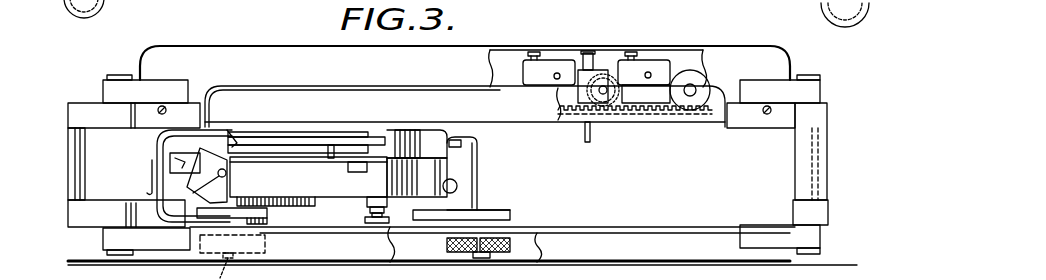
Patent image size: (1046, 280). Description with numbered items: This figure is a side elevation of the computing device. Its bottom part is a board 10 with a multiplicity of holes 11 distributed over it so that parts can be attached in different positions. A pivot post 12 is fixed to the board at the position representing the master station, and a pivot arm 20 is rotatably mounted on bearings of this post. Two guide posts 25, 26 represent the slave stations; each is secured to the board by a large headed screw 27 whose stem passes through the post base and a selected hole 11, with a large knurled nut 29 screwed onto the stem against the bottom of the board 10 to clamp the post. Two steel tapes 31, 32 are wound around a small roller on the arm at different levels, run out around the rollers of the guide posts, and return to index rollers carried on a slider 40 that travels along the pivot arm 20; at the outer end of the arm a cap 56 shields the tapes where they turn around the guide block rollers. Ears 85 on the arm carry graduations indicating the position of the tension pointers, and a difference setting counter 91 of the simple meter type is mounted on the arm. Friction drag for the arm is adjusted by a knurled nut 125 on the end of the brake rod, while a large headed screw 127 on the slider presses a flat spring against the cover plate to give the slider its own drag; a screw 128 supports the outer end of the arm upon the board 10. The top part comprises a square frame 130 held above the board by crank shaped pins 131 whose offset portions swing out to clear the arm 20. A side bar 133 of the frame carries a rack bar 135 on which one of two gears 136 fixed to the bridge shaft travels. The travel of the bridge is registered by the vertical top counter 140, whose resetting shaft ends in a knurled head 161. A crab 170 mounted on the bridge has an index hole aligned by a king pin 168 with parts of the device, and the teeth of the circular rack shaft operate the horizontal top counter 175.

The board 10 is at (670, 227).
The holes 11 is at (453, 235).
The pivot post 12 is at (228, 143).
The pivot arm 20 is at (290, 183).
The guide post 25 is at (470, 158).
The guide post 26 is at (160, 161).
The large headed screw 27 is at (518, 212).
The knurled nut 29 is at (518, 247).
The steel tape 31 is at (294, 140).
The steel tape 32 is at (266, 132).
The slider 40 is at (337, 148).
The cap 56 is at (434, 140).
The ears 85 is at (348, 166).
The station B difference setting counter 91 is at (147, 183).
The knurled nut 125 is at (458, 187).
The large headed screw 127 is at (401, 130).
The screw 128 is at (367, 216).
The square frame 130 is at (150, 52).
The crank shaped pins 131 is at (79, 146).
The side bar 133 is at (546, 47).
The rack bar 135 is at (645, 112).
The gears 136 is at (604, 106).
The vertical top counter 140 is at (520, 74).
The knurled head 161 is at (531, 48).
The king pin 168 is at (584, 140).
The crab 170 is at (605, 70).
The horizontal top counter 175 is at (646, 62).